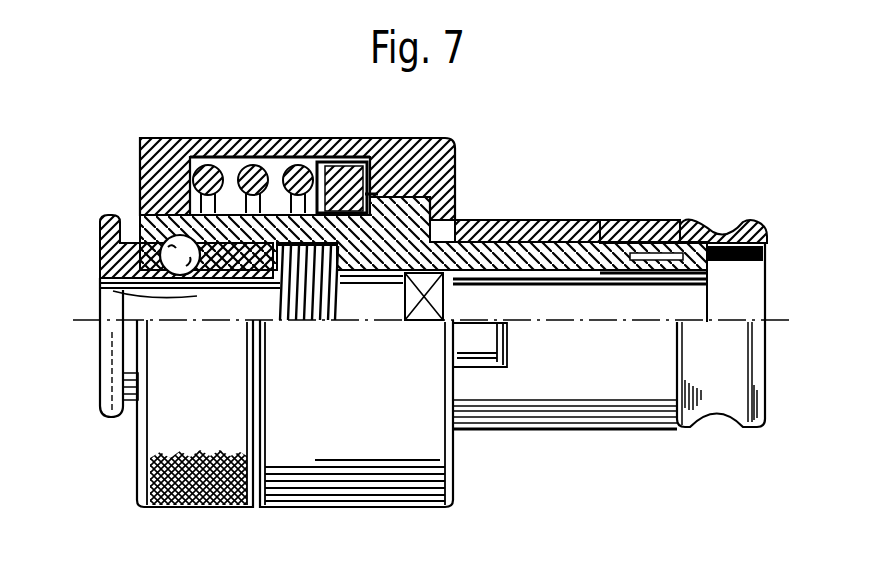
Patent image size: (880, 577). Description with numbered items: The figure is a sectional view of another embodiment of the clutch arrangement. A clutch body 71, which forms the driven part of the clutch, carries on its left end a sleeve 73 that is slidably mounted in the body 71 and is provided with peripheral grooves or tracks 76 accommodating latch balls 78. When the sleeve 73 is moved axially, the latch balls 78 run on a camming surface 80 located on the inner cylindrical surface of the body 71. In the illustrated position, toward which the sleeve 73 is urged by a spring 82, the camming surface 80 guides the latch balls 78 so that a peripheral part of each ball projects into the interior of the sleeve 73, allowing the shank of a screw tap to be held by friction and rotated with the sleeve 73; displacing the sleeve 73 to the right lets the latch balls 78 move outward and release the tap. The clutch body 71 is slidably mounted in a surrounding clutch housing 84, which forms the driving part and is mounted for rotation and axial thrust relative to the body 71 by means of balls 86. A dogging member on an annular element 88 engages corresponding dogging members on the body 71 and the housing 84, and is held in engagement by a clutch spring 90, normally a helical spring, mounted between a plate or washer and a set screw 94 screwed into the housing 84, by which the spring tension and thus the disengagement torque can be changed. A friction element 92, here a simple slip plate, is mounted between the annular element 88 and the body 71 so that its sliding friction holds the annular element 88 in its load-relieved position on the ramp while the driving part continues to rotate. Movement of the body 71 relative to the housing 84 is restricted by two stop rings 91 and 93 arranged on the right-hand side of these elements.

The clutch body 71 is at (497, 222).
The sleeve 73 is at (127, 358).
The peripheral grooves or tracks 76 is at (125, 292).
The latch balls 78 is at (107, 258).
The camming surface 80 is at (140, 193).
The spring 82 is at (318, 312).
The clutch housing 84 is at (566, 218).
The balls 86 is at (457, 188).
The annular element 88 is at (337, 139).
The clutch spring 90 is at (203, 138).
The stop ring 91 is at (633, 214).
The friction element 92 is at (303, 141).
The stop ring 93 is at (690, 218).
The set screw 94 is at (138, 172).